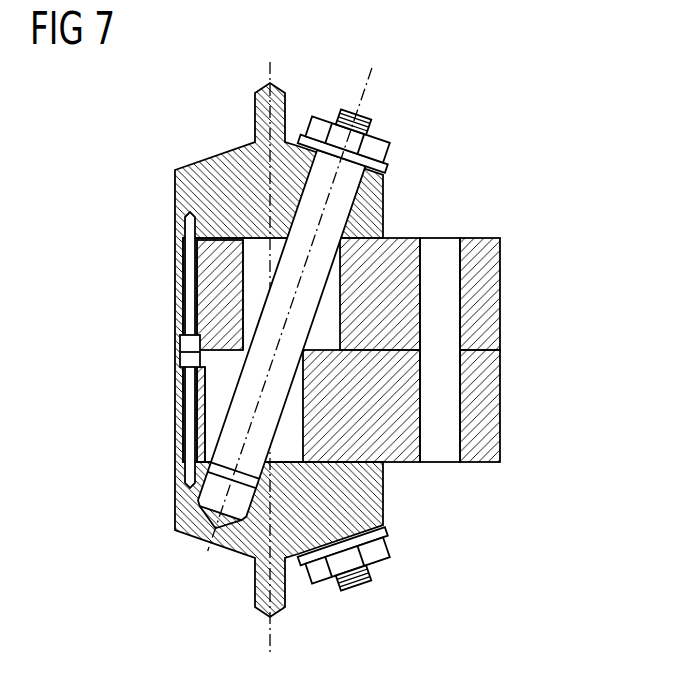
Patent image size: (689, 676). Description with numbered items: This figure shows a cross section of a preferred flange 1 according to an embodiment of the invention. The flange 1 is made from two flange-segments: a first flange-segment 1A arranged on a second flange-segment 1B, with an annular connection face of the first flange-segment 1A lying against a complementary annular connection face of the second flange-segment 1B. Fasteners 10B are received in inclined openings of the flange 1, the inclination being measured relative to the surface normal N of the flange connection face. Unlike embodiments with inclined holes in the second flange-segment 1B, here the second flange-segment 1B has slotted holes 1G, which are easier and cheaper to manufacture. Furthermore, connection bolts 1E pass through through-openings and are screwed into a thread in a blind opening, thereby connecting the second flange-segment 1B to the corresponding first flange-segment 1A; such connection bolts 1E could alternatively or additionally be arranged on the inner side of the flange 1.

The flange 1 is at (295, 358).
The first flange-segment 1A is at (232, 158).
The second flange-segment 1B is at (497, 256).
The connection bolt 1E is at (196, 250).
The slotted hole 1G is at (248, 315).
The fastener 10B is at (352, 110).
The surface normal N is at (268, 638).